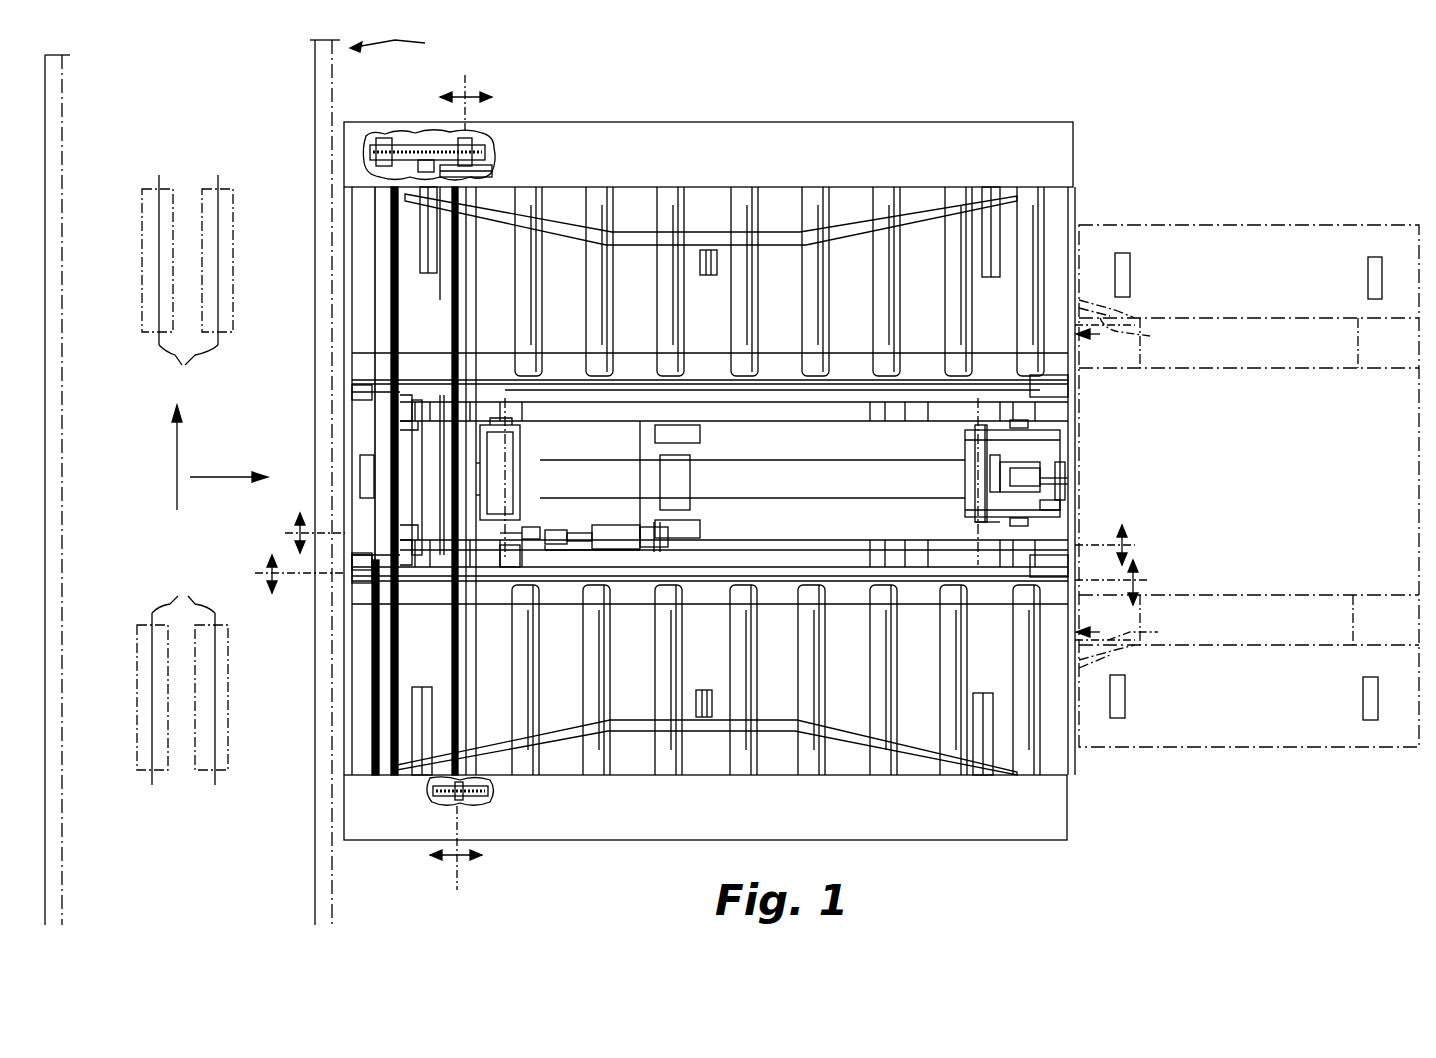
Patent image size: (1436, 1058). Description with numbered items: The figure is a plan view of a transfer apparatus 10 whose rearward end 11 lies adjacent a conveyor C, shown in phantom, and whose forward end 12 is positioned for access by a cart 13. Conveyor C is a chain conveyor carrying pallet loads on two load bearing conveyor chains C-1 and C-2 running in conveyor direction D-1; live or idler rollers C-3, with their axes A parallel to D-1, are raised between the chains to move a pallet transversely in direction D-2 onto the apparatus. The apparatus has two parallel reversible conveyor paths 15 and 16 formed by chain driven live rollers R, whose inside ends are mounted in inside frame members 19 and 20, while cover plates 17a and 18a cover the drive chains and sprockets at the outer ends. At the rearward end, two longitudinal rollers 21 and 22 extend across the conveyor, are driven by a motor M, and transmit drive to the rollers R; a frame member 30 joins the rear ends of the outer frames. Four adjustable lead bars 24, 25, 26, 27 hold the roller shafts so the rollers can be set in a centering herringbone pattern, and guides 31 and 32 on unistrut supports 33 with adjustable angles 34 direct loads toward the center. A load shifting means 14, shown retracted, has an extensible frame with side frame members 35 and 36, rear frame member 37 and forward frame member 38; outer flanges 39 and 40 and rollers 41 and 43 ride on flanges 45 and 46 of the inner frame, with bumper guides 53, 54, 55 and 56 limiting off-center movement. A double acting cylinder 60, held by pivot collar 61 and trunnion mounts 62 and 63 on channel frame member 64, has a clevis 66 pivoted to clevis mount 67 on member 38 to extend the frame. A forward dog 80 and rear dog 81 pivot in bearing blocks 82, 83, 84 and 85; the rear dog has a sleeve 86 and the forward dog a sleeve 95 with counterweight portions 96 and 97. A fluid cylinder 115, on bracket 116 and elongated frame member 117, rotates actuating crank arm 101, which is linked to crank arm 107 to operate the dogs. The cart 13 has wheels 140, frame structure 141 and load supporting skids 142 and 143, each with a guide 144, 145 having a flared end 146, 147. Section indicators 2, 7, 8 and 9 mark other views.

The transfer apparatus 10 is at (1050, 84).
The rearward end 11 is at (340, 372).
The forward end 12 is at (1073, 130).
The cart 13 is at (1306, 185).
The load shifting means 14 is at (812, 446).
The conveyor path 15 is at (912, 682).
The conveyor path 16 is at (712, 298).
The cover plate 17a is at (705, 807).
The cover plate 18a is at (708, 154).
The inside frame member 19 is at (705, 607).
The inside frame member 20 is at (770, 355).
The longitudinal roller 21 is at (385, 638).
The longitudinal roller 22 is at (447, 481).
The adjustable lead bar 24 is at (600, 380).
The adjustable lead bar 25 is at (800, 398).
The adjustable lead bar 26 is at (795, 575).
The adjustable lead bar 27 is at (850, 560).
The frame member 30 is at (340, 312).
The guide 31 is at (565, 733).
The guide 32 is at (565, 225).
The unistrut support 33 is at (705, 187).
The adjustable angle 34 is at (717, 262).
The side frame member 35 is at (752, 540).
The side frame member 36 is at (768, 420).
The rear frame member 37 is at (417, 477).
The forward frame member 38 is at (1060, 455).
The outer flange 39 is at (850, 560).
The outer flange 40 is at (897, 400).
The roller 41 is at (360, 590).
The roller 43 is at (352, 392).
The flange 45 is at (455, 618).
The flange 46 is at (417, 386).
The bumper guide 53 is at (1068, 568).
The bumper guide 54 is at (1068, 393).
The bumper guide 55 is at (412, 553).
The bumper guide 56 is at (400, 433).
The double acting cylinder 60 is at (752, 479).
The pivot collar 61 is at (690, 482).
The trunnion mount 62 is at (700, 525).
The trunnion mount 63 is at (700, 434).
The channel frame member 64 is at (705, 508).
The clevis 66 is at (1040, 470).
The clevis mount 67 is at (1055, 484).
The forward dog 80 is at (965, 482).
The rear dog 81 is at (513, 488).
The bearing block 82 is at (520, 560).
The bearing block 83 is at (522, 411).
The bearing block 84 is at (965, 552).
The bearing block 85 is at (965, 411).
The sleeve 86 is at (490, 457).
The sleeve 95 is at (990, 445).
The counterweight portion 96 is at (1060, 440).
The counterweight portion 97 is at (1060, 522).
The actuating crank arm 101 is at (520, 522).
The crank arm 107 is at (990, 525).
The double acting fluid cylinder 115 is at (605, 525).
The bracket 116 is at (648, 525).
The elongated frame member 117 is at (640, 545).
The wheel 140 is at (1130, 258).
The frame structure 141 is at (1240, 748).
The load supporting skid 142 is at (1292, 598).
The load supporting skid 143 is at (1297, 370).
The guide 144 is at (1280, 650).
The guide 145 is at (1283, 313).
The flared end 146 is at (1135, 645).
The flared end 147 is at (1134, 326).
The axis A is at (185, 479).
The conveyor C is at (391, 42).
The load bearing conveyor chain C-1 is at (68, 128).
The load bearing conveyor chain C-2 is at (315, 90).
The live or idler roller C-3 is at (212, 182).
The conveyor direction D-1 is at (182, 440).
The transverse direction D-2 is at (222, 470).
The motor M is at (408, 247).
The chain driven live roller R is at (575, 328).
The section line 2 is at (703, 538).
The section line 7 is at (461, 482).
The section line 8 is at (1091, 481).
The section line 9 is at (702, 579).